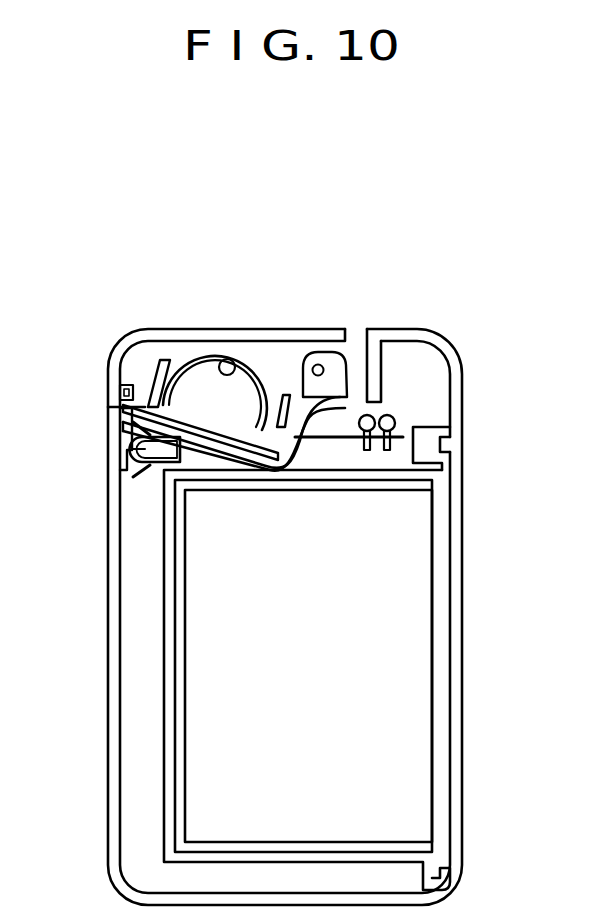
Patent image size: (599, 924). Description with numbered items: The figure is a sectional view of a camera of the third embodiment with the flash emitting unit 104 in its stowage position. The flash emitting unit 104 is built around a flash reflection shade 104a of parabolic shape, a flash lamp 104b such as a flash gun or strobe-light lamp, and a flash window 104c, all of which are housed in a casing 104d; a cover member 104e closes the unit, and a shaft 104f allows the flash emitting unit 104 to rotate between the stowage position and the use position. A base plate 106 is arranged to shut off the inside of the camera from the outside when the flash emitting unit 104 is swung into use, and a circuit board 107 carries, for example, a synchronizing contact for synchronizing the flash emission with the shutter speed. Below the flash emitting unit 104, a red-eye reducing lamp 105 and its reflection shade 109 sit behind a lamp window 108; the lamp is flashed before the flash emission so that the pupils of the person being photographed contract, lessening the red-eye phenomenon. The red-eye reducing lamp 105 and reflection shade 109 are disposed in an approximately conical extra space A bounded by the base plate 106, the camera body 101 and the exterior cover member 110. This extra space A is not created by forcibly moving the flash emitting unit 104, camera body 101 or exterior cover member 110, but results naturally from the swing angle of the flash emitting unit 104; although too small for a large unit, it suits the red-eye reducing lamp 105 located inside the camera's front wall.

The flash emitting unit 104 is at (453, 243).
The flash reflection shade 104a is at (197, 357).
The flash lamp 104b is at (258, 360).
The flash window 104c is at (203, 420).
The casing 104d is at (156, 360).
The cover member 104e is at (118, 342).
The shaft 104f is at (427, 328).
The red-eye reducing lamp 105 is at (132, 452).
The base plate 106 is at (290, 470).
The circuit board 107 is at (404, 436).
The lamp window 108 is at (117, 435).
The reflection shade 109 is at (147, 476).
The camera body 101 is at (171, 540).
The exterior cover member 110 is at (120, 583).
The extra space A is at (223, 472).